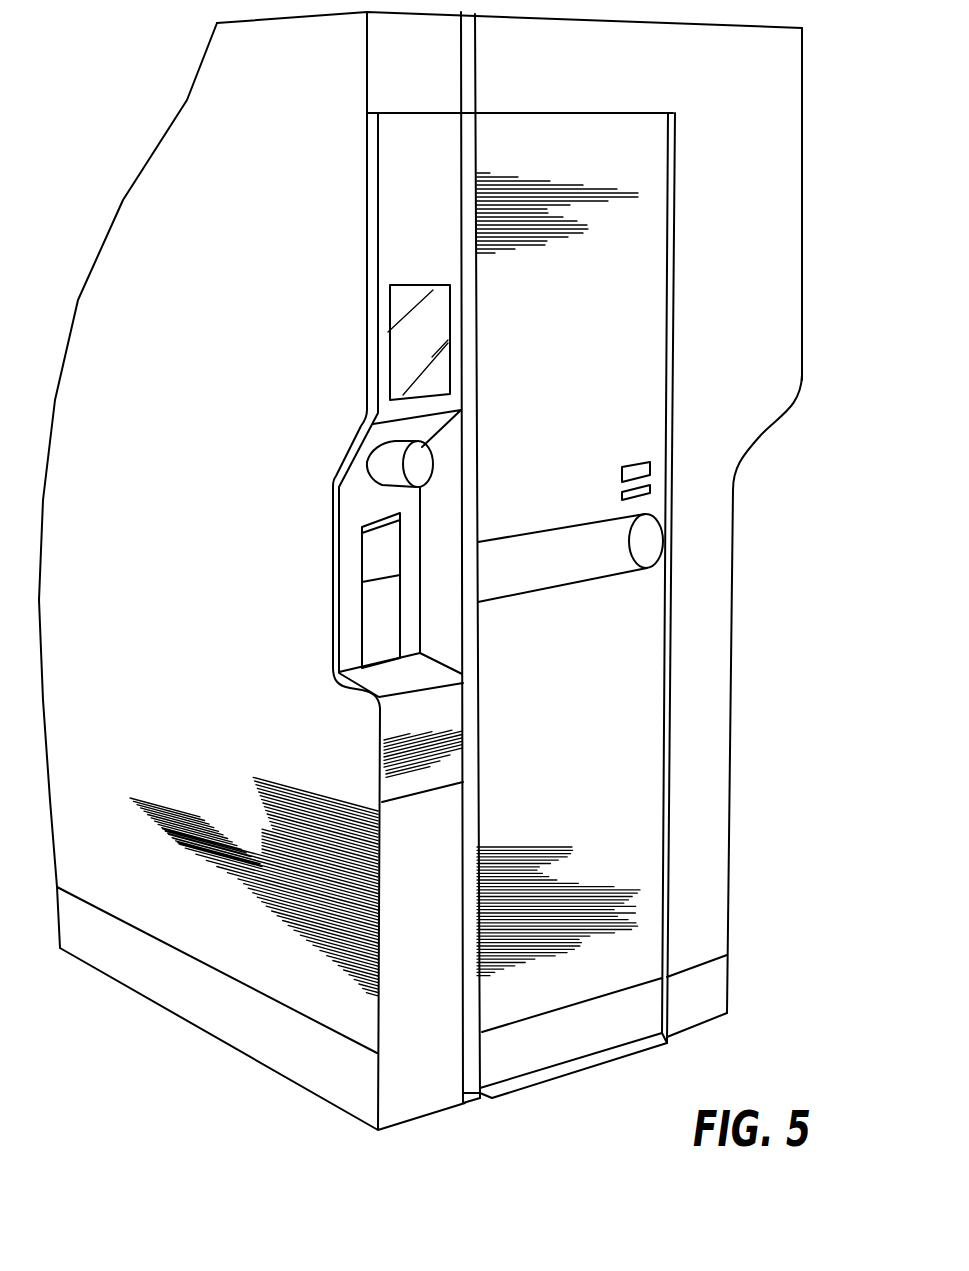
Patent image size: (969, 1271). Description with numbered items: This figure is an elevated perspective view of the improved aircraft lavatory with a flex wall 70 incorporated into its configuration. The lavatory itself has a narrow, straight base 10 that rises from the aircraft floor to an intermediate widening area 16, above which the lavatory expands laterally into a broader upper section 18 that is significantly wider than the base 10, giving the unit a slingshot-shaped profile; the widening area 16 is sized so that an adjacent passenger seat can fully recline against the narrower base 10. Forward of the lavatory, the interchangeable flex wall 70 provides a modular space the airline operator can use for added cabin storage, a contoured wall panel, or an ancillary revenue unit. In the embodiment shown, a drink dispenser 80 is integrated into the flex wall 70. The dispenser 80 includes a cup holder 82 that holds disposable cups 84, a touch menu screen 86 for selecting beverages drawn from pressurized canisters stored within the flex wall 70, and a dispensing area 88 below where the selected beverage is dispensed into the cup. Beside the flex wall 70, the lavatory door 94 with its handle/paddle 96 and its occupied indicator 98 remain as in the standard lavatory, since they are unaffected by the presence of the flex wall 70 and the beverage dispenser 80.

The narrow base 10 is at (690, 930).
The widening area 16 is at (763, 432).
The upper section 18 is at (755, 153).
The flex wall 70 is at (418, 1093).
The drink dispenser 80 is at (365, 502).
The cup holder 82 is at (375, 460).
The disposable cups 84 is at (425, 463).
The touch menu screen 86 is at (420, 315).
The dispensing area 88 is at (392, 678).
The door 94 is at (630, 685).
The handle/paddle 96 is at (650, 537).
The occupied indicator 98 is at (633, 460).